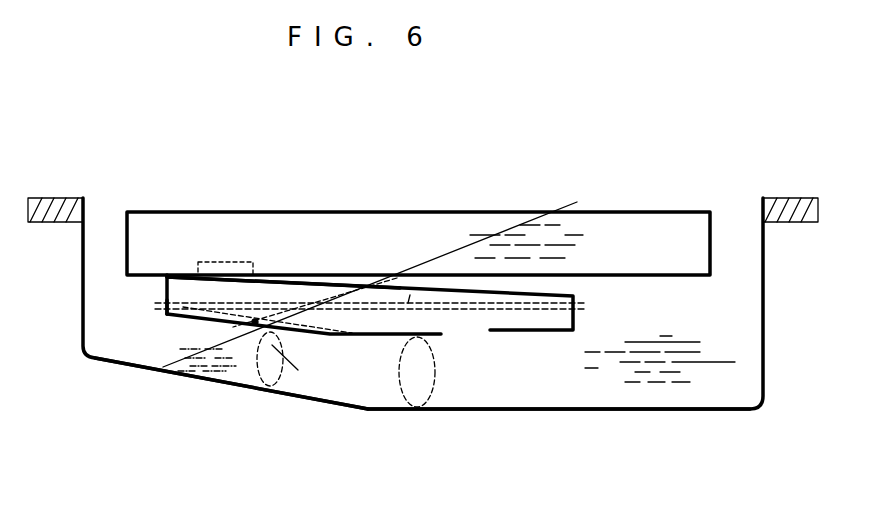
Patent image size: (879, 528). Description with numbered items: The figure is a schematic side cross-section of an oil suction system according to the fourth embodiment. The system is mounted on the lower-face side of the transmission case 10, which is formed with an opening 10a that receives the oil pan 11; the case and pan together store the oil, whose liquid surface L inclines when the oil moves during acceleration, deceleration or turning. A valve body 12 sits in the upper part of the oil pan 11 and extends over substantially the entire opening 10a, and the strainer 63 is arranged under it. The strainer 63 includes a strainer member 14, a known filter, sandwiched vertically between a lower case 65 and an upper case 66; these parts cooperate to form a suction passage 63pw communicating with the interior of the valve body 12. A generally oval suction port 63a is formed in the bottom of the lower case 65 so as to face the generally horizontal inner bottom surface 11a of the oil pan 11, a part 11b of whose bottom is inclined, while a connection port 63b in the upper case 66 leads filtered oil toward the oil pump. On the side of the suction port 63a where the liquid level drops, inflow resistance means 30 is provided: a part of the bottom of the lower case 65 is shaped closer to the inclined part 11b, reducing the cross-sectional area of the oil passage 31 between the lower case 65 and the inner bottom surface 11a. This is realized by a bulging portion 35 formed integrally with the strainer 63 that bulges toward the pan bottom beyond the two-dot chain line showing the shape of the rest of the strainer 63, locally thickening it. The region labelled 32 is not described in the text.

The transmission case 10 is at (56, 198).
The opening 10a is at (763, 220).
The oil pan 11 is at (765, 353).
The inner bottom surface 11a is at (517, 403).
The inclined part of the bottom 11b is at (217, 380).
The valve body 12 is at (398, 212).
The strainer member 14 is at (410, 303).
The inflow resistance means 30 is at (268, 342).
The oil passage 31 is at (257, 386).
The lower region 32 is at (334, 431).
The bulging portion 35 is at (252, 323).
The strainer 63 is at (593, 307).
The suction port 63a is at (477, 337).
The connection port 63b is at (218, 262).
The suction passage 63pw is at (290, 280).
The lower case 65 is at (165, 317).
The upper case 66 is at (193, 292).
The liquid surface L is at (173, 358).